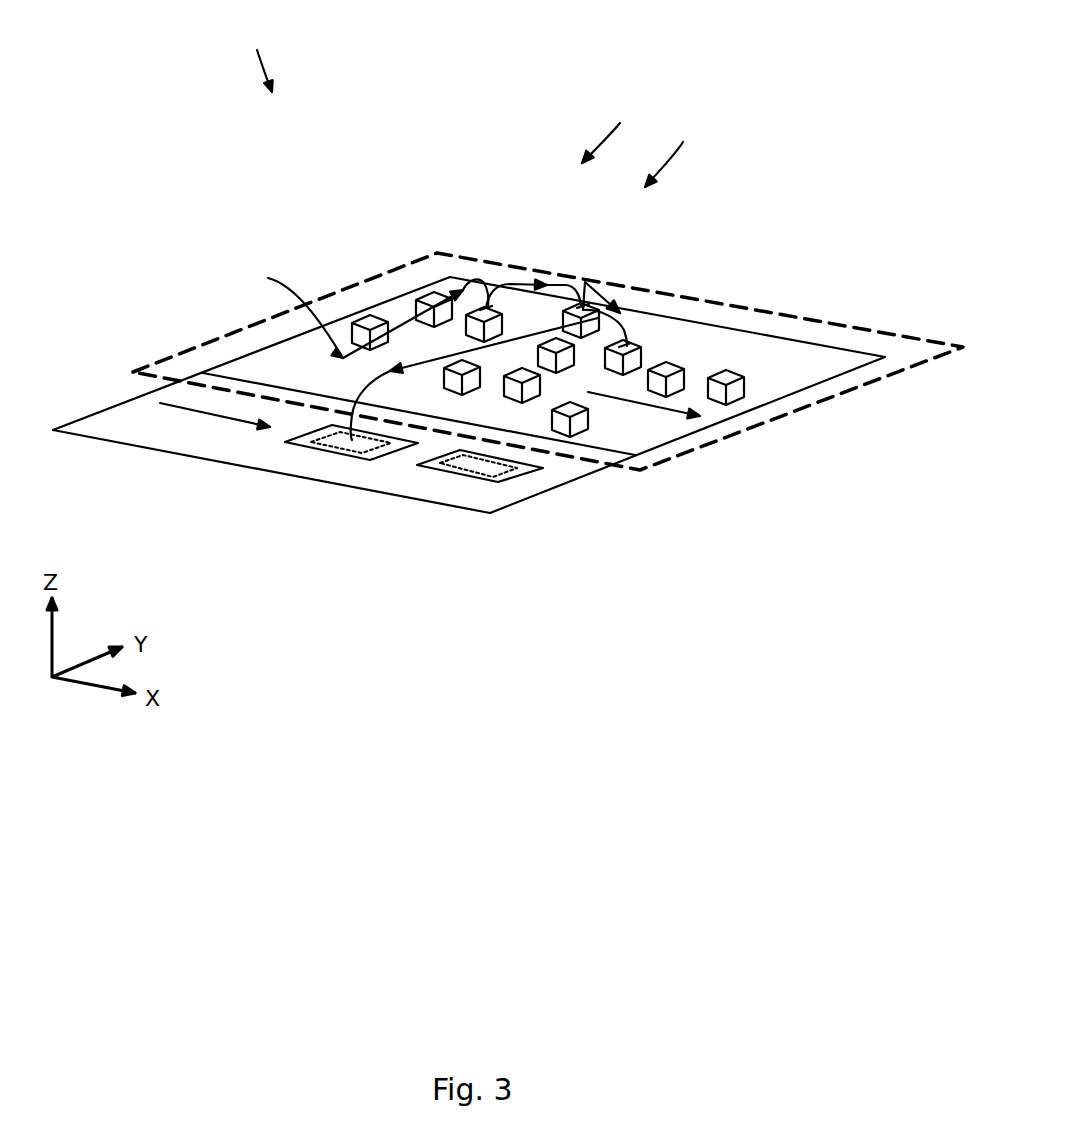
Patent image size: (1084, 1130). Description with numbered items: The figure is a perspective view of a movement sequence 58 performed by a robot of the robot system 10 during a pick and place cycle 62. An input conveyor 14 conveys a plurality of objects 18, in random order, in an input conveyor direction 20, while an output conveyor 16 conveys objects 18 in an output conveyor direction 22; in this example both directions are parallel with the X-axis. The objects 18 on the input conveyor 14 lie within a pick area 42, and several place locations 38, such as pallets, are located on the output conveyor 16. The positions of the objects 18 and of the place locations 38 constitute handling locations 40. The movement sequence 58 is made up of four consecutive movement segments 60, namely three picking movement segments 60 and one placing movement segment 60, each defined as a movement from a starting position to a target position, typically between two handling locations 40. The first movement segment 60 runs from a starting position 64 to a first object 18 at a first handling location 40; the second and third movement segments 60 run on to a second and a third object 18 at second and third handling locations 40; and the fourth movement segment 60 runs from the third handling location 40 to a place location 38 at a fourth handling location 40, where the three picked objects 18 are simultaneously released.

The robot system 10 is at (254, 53).
The input conveyor 14 is at (808, 372).
The output conveyor 16 is at (152, 432).
The objects 18 is at (668, 368).
The input conveyor direction 20 is at (667, 410).
The output conveyor direction 22 is at (222, 418).
The place locations 38 is at (332, 450).
The handling locations 40 is at (490, 310).
The pick area 42 is at (810, 328).
The movement sequence 58 is at (618, 127).
The movement segments 60 is at (407, 321).
The pick and place cycle 62 is at (680, 151).
The starting position 64 is at (292, 308).